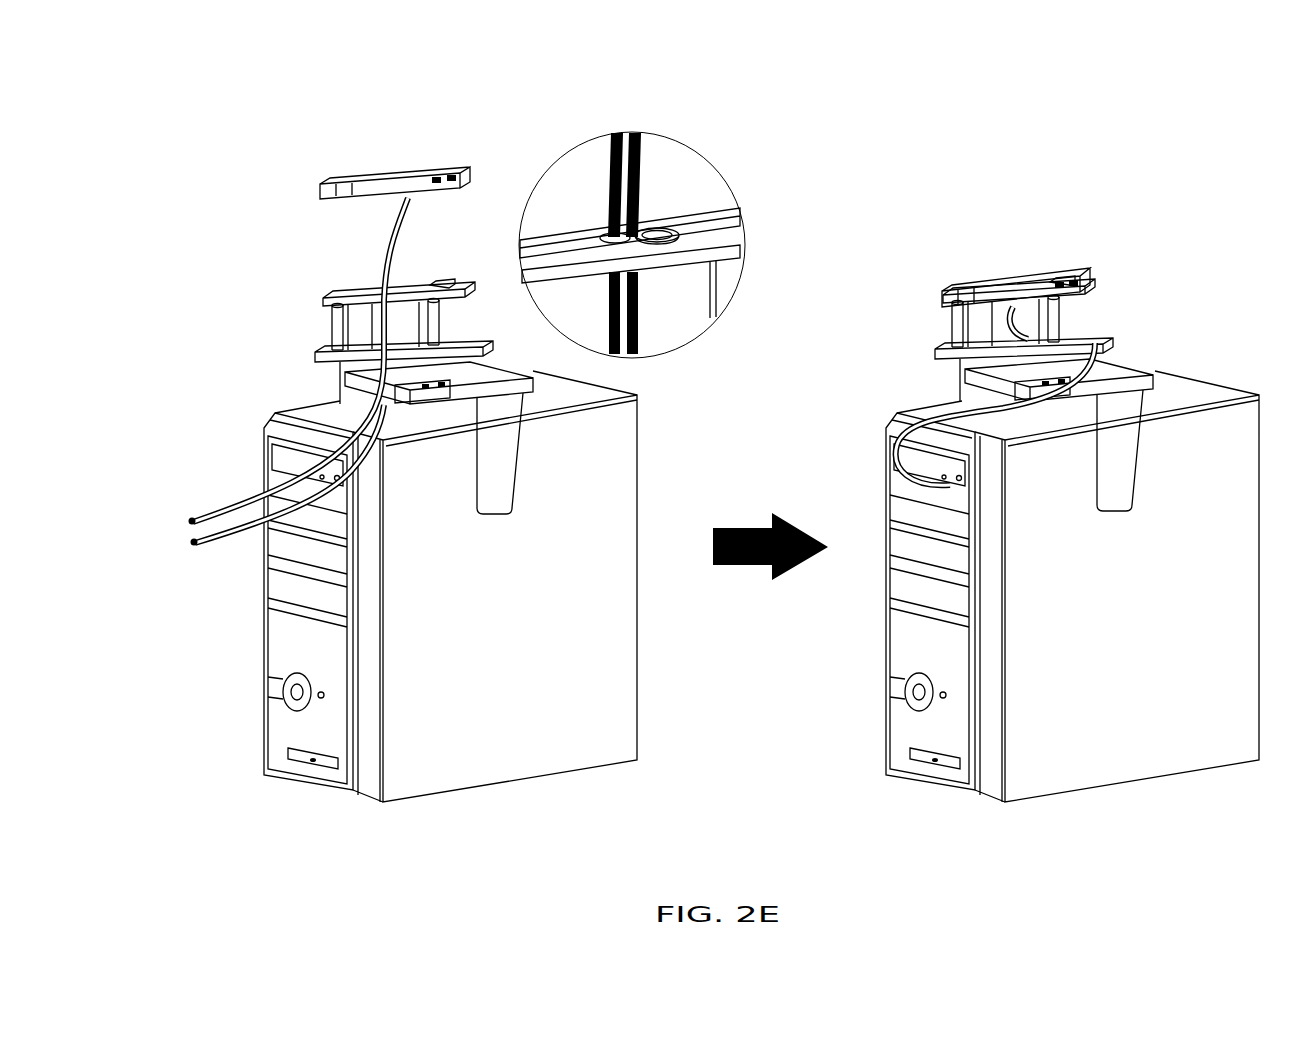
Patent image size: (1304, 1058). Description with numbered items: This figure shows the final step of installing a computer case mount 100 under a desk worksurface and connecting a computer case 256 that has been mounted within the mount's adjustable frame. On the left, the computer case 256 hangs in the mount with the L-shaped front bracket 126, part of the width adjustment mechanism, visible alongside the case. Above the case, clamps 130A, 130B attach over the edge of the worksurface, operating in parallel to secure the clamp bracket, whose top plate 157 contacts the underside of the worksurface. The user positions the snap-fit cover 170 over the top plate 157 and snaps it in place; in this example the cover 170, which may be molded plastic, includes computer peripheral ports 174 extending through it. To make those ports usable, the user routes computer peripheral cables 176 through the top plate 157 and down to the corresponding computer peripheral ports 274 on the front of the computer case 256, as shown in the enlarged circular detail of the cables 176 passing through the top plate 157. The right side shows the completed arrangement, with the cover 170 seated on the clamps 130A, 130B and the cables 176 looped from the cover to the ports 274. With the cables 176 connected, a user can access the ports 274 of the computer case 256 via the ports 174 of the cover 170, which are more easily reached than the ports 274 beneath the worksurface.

The computer case mount 100 is at (240, 160).
The snap-fit cover 170 is at (380, 178).
The computer peripheral ports 174 is at (450, 170).
The computer peripheral cables 176 is at (378, 257).
The top plate 157 is at (658, 228).
The L-shaped front bracket 126 is at (500, 447).
The computer peripheral ports 274 is at (343, 478).
The computer case 256 is at (521, 626).
The clamp 130A is at (950, 327).
The clamp 130B is at (1062, 327).